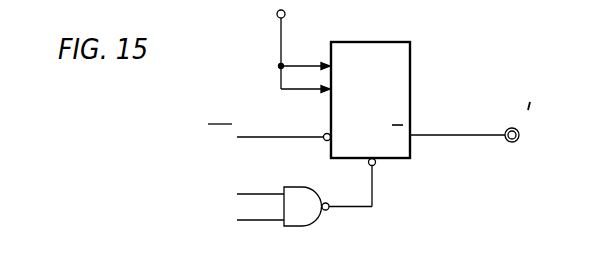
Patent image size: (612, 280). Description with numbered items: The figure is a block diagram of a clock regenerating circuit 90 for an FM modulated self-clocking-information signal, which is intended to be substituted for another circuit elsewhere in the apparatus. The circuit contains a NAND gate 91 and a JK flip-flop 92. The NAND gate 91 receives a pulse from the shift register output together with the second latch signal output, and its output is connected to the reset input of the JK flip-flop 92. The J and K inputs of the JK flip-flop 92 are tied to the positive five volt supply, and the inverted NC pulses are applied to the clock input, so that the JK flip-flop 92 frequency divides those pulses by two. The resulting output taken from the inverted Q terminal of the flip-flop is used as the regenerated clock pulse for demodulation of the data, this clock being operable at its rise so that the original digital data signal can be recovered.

The clock regenerating circuit 90 is at (235, 86).
The NAND gate 91 is at (307, 218).
The JK flip-flop 92 is at (397, 42).